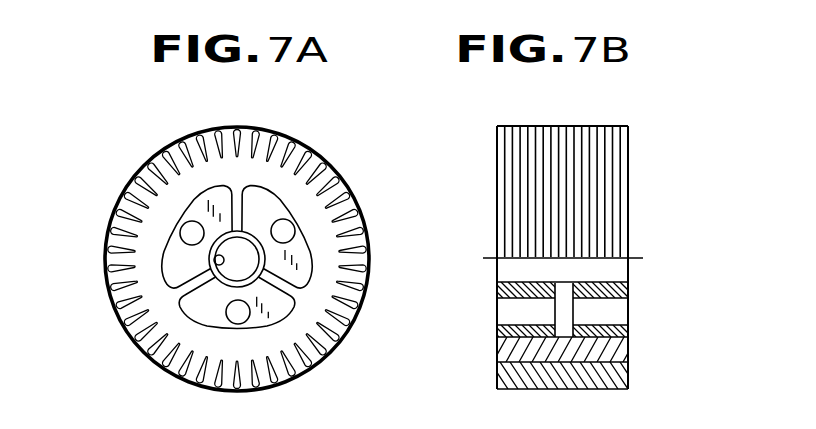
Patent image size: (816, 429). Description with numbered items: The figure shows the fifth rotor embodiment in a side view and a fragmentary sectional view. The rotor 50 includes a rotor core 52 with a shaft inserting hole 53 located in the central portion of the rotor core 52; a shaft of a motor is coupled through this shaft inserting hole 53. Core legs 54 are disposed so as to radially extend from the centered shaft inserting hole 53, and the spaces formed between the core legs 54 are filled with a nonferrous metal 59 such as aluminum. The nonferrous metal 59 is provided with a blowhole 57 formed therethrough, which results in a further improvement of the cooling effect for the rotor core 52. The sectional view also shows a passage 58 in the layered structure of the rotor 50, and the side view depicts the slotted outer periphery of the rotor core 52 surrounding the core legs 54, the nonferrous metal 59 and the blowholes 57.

In FIG. 7A, the rotor 50 is at (368, 192).
In FIG. 7B, the rotor 50 is at (650, 163).
In FIG. 7A, the rotor core 52 is at (130, 316).
In FIG. 7B, the rotor core 52 is at (620, 201).
In FIG. 7A, the shaft inserting hole 53 is at (214, 259).
In FIG. 7A, the core legs 54 is at (198, 208).
In FIG. 7A, the blowhole 57 is at (180, 236).
In FIG. 7B, the blowhole 57 is at (627, 323).
In FIG. 7B, the channel 58 is at (562, 290).
In FIG. 7A, the nonferrous metal 59 is at (237, 207).
In FIG. 7B, the nonferrous metal 59 is at (627, 290).